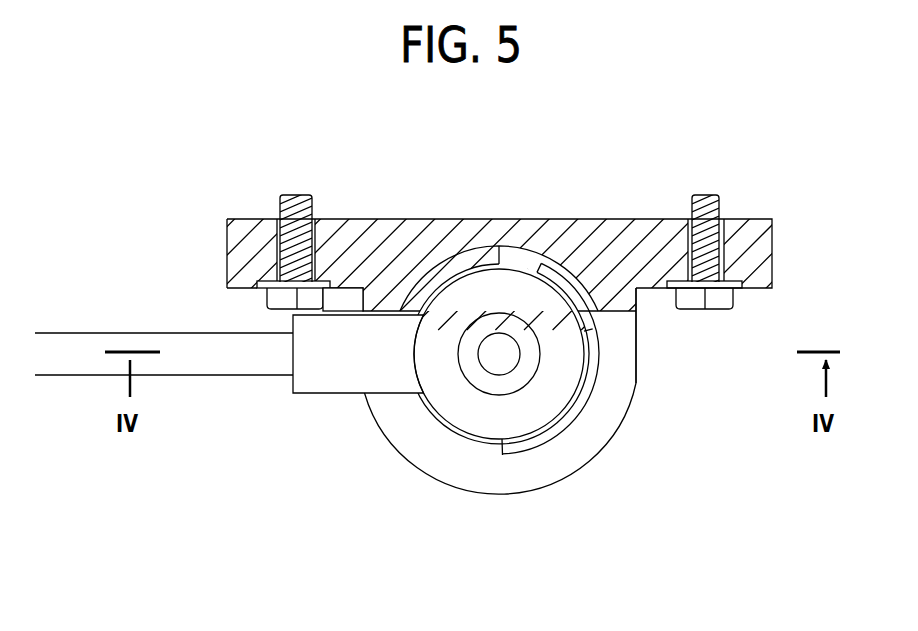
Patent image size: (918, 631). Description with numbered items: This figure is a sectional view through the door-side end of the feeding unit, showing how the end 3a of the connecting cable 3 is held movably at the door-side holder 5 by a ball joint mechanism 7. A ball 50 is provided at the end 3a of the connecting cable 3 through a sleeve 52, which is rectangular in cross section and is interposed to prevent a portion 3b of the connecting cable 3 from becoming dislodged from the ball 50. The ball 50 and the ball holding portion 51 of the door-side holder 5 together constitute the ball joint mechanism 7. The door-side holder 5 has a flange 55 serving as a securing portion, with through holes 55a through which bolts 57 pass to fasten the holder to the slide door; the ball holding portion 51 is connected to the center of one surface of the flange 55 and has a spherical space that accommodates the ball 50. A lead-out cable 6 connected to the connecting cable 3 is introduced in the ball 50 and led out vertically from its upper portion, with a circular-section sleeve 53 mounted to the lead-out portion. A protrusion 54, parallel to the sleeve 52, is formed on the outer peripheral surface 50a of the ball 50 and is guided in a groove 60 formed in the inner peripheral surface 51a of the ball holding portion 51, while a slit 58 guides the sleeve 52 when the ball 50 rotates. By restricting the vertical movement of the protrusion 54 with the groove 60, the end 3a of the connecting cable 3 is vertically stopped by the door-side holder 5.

The connecting cable 3 is at (164, 408).
The end of the connecting cable 3a is at (527, 362).
The portion of the connecting cable 3b is at (69, 370).
The door-side holder 5 is at (484, 225).
The lead-out cable 6 is at (497, 352).
The ball joint mechanism 7 is at (527, 383).
The ball 50 is at (527, 362).
The outer peripheral surface of the ball 50a is at (455, 421).
The ball holding portion 51 is at (488, 418).
The inner peripheral surface 51a is at (468, 419).
The sleeve 52 is at (340, 383).
The sleeve 53 is at (470, 333).
The protrusion 54 is at (570, 413).
The flange 55 is at (244, 235).
The through holes 55a is at (314, 228).
The bolts 57 is at (293, 195).
The slit 58 is at (618, 369).
The groove 60 is at (522, 250).